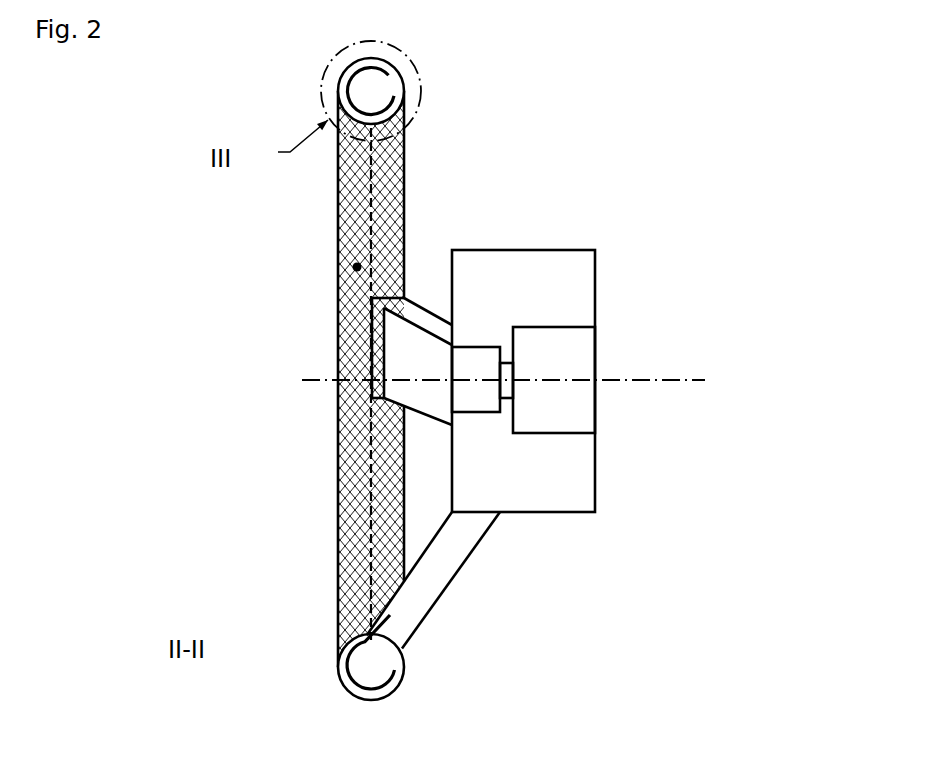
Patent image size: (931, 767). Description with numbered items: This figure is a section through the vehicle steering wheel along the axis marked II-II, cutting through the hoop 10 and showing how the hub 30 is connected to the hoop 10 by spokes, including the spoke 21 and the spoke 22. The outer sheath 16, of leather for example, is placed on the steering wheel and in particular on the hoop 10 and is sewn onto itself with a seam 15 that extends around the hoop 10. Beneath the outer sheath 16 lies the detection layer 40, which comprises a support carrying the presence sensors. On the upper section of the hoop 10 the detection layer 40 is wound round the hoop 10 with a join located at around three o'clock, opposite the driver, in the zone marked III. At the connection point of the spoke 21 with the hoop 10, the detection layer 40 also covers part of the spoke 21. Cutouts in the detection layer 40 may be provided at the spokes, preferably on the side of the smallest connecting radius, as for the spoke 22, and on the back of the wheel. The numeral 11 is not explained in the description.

The hoop 10 is at (371, 92).
The profile body 11 is at (316, 379).
The seam 15 is at (482, 384).
The outer sheath 16 is at (452, 98).
The spoke 21 is at (480, 584).
The spoke 22 is at (335, 359).
The hub 30 is at (567, 368).
The detection layer 40 is at (456, 382).